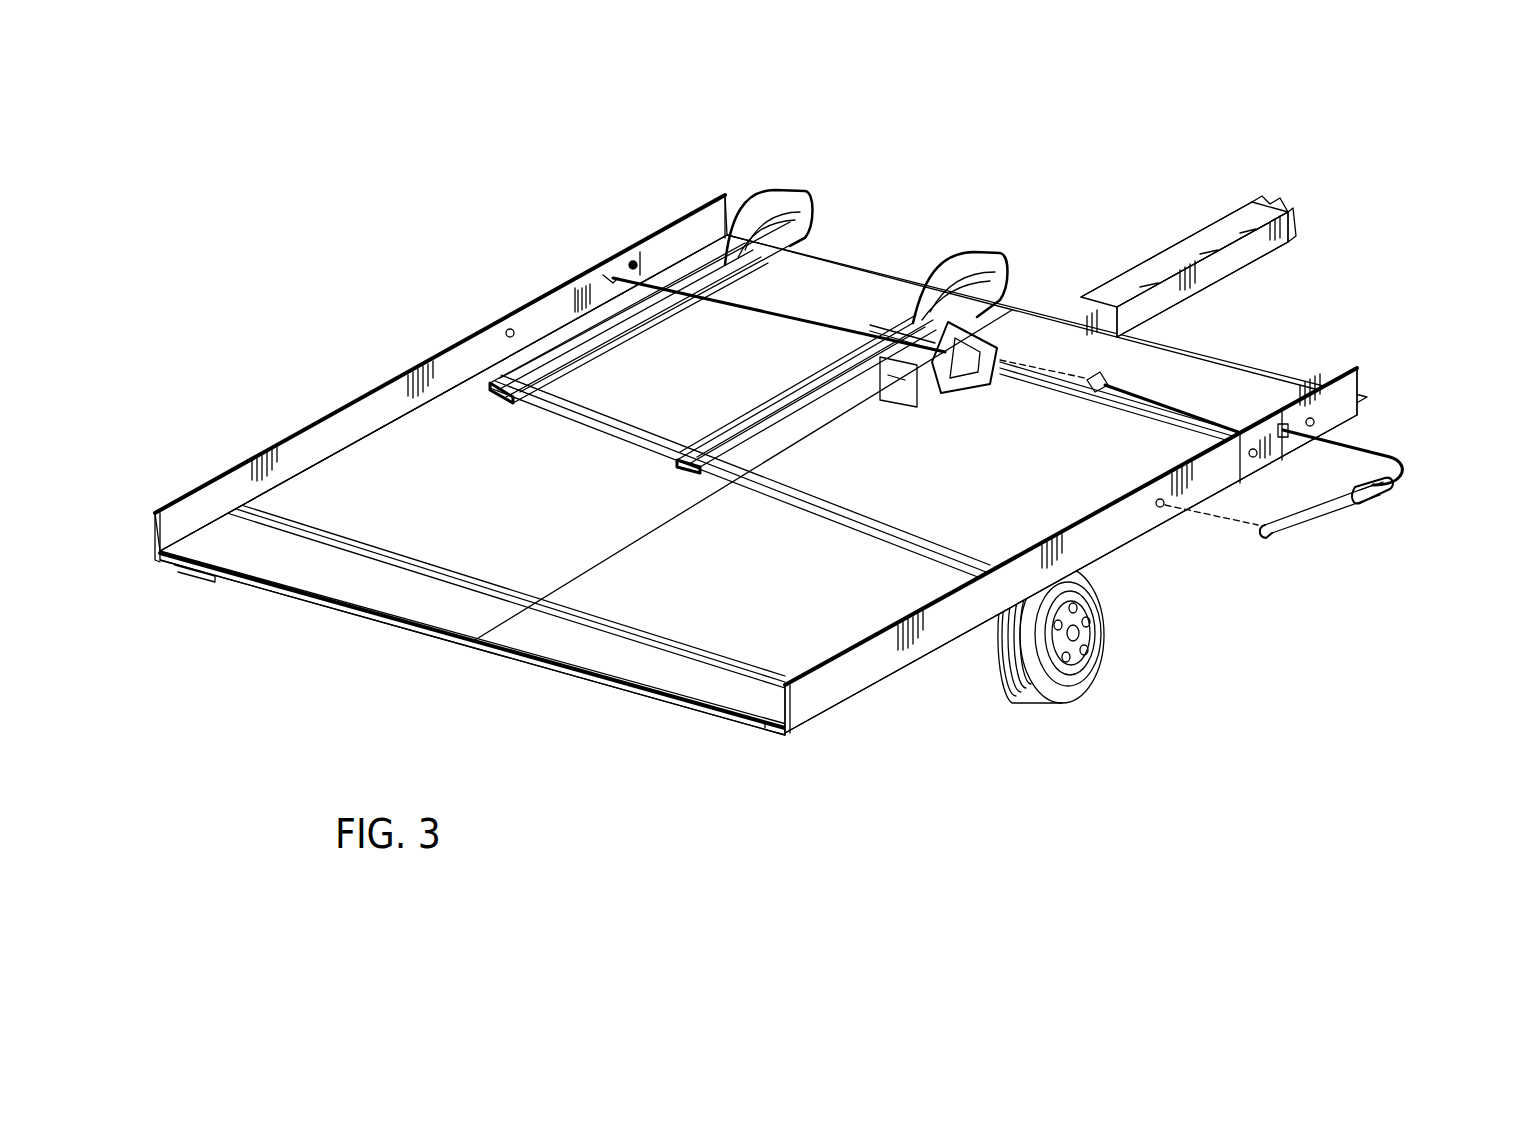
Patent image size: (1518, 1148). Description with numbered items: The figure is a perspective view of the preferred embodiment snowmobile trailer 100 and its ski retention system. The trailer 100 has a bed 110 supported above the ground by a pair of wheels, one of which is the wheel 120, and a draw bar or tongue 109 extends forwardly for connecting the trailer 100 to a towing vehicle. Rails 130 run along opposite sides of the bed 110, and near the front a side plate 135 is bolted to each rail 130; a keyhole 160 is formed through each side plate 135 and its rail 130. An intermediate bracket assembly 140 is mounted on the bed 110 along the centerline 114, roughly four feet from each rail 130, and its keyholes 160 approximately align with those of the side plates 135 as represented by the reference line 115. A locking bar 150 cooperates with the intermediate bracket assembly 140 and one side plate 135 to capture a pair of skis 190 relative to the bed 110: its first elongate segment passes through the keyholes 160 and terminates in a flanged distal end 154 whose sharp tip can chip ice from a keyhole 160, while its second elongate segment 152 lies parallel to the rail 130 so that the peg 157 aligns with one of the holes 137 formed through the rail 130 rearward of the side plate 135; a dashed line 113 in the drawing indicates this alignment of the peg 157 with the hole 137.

The snowmobile trailer 100 is at (696, 712).
The draw bar or tongue 109 is at (1250, 196).
The bed 110 is at (590, 652).
The strap routing line 113 is at (1213, 517).
The centerline 114 is at (540, 602).
The reference line 115 is at (1060, 373).
The wheel 120 is at (1098, 655).
The side rail 130 is at (293, 458).
The side plate 135 is at (600, 288).
The holes 137 is at (506, 331).
The intermediate bracket assembly 140 is at (1000, 345).
The locking bar 150 is at (1370, 450).
The second elongate segment 152 is at (1397, 477).
The distal end 154 is at (940, 393).
The peg 157 is at (1252, 537).
The keyhole 160 is at (616, 272).
The skis 190 is at (950, 263).